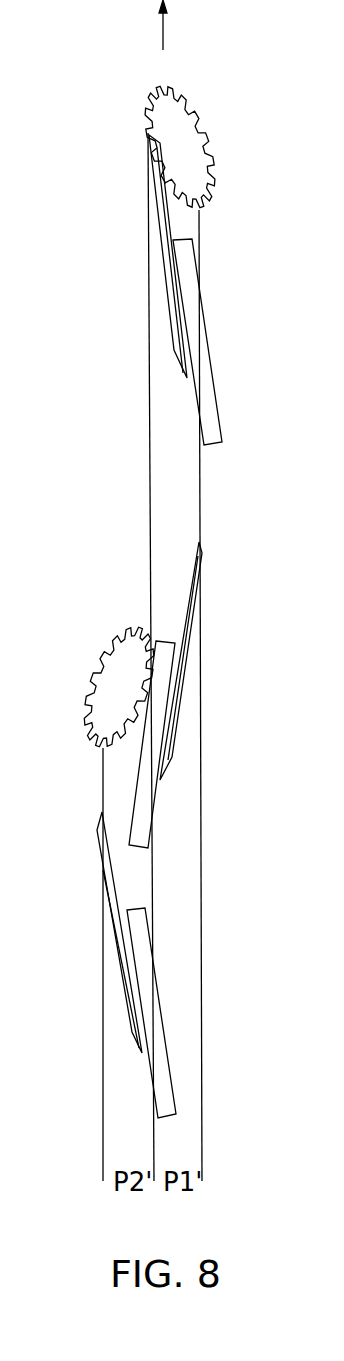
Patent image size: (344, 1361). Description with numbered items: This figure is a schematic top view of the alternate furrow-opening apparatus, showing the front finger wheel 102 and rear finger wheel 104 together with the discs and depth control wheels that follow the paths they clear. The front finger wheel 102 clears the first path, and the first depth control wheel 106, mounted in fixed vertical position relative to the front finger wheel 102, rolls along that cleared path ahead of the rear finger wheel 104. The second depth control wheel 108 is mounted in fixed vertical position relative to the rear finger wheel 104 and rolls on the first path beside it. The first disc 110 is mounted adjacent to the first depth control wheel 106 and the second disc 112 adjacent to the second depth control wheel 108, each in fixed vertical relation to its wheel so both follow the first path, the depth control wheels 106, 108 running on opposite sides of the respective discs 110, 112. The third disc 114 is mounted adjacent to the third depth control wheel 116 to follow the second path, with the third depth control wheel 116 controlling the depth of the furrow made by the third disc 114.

The front finger wheel 102 is at (197, 128).
The rear finger wheel 104 is at (108, 665).
The first depth control wheel 106 is at (218, 399).
The second depth control wheel 108 is at (155, 800).
The first disc 110 is at (147, 173).
The second disc 112 is at (202, 580).
The third disc 114 is at (97, 850).
The third depth control wheel 116 is at (167, 1047).